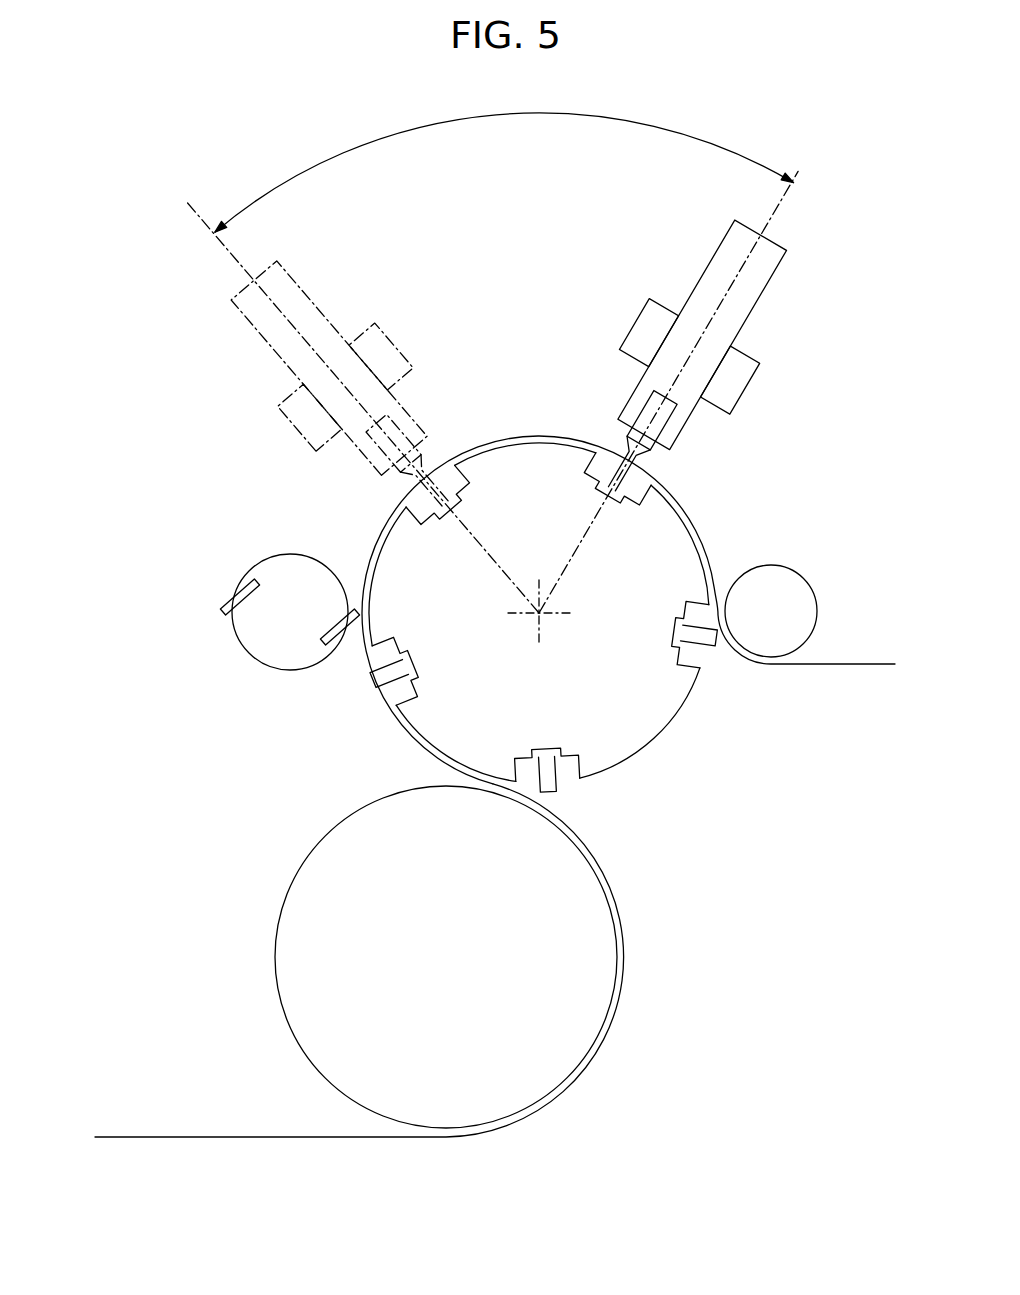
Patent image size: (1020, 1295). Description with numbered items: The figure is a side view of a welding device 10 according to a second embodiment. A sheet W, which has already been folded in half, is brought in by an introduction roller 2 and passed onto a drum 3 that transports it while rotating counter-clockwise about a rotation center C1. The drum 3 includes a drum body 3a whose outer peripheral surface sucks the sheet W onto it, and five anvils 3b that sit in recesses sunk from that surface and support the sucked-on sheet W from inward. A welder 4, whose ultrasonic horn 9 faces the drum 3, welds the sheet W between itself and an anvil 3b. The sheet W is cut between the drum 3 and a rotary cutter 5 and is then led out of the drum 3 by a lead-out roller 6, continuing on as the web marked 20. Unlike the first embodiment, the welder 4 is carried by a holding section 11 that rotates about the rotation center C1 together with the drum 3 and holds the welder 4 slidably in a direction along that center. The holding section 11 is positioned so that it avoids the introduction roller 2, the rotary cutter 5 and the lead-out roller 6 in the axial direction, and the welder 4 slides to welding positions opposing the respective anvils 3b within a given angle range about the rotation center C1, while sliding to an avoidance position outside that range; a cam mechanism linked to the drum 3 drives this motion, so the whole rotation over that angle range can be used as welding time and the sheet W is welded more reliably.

The introduction roller 2 is at (808, 580).
The drum 3 is at (723, 500).
The drum body 3a is at (526, 458).
The anvils 3b is at (460, 505).
The welder 4 is at (312, 282).
The rotary cutter 5 is at (270, 548).
The lead-out roller 6 is at (244, 940).
The ultrasonic horn 9 is at (398, 417).
The welding device 10 is at (203, 362).
The holding section 11 is at (398, 343).
The belt 20 is at (627, 936).
The rotation center C1 is at (547, 620).
The sheet W is at (835, 668).